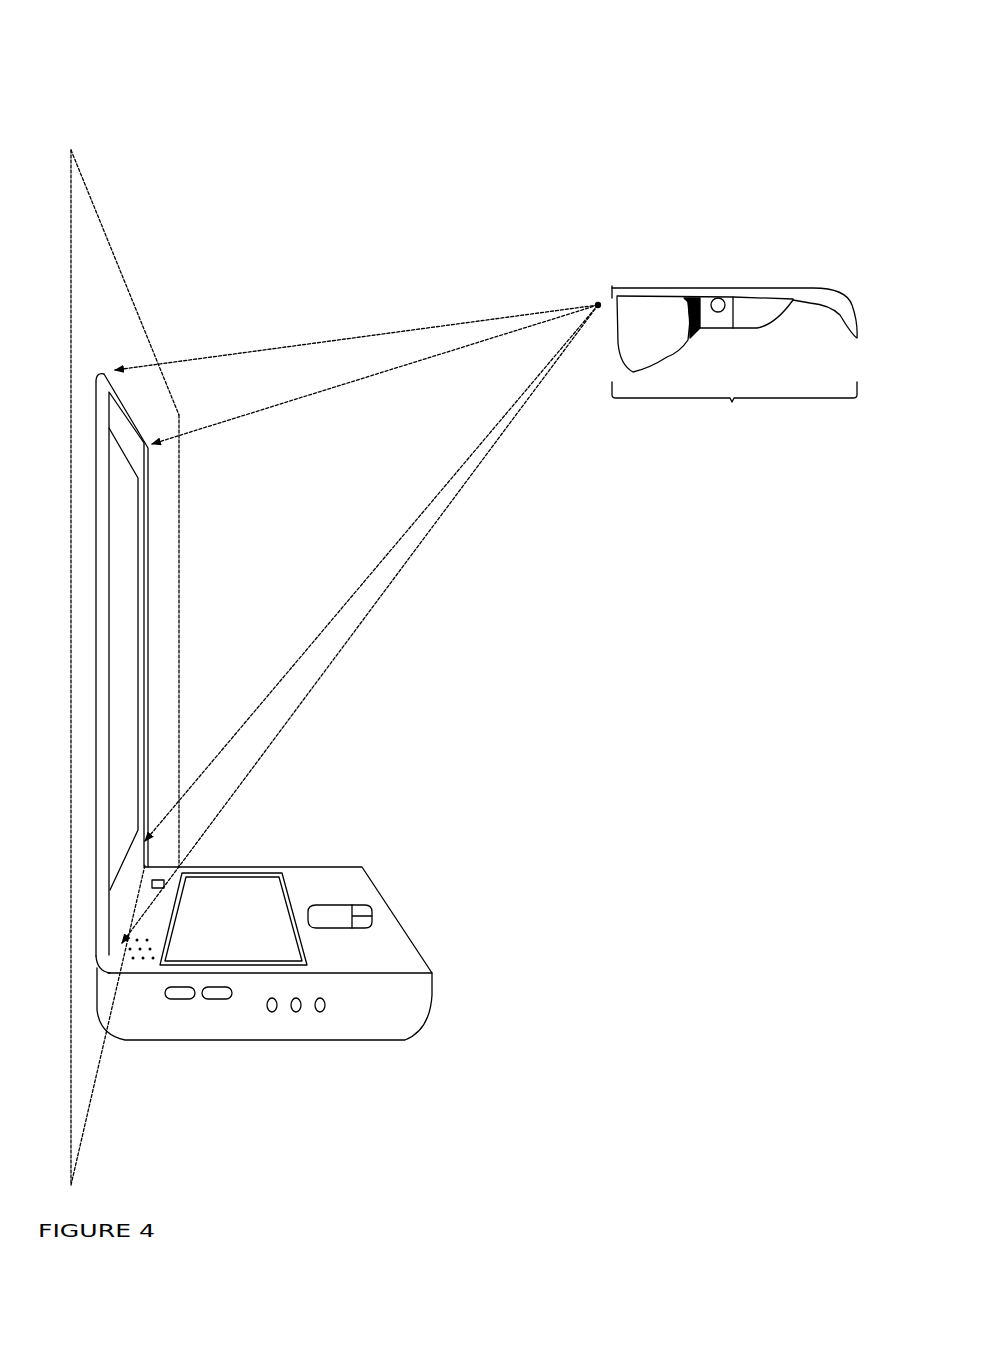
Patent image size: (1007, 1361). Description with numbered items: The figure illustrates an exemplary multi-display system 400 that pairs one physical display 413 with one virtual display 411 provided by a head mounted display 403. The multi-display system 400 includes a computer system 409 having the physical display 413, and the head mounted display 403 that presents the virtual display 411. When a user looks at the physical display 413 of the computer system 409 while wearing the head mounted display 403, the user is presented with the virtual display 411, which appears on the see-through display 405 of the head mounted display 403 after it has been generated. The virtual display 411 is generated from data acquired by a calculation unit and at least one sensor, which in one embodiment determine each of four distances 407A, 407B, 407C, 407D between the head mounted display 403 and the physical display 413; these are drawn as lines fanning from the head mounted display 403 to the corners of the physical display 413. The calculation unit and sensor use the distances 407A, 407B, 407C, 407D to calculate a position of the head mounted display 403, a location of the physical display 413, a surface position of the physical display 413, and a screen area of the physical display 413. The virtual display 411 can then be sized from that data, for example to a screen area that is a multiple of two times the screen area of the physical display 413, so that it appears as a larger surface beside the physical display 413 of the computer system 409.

The multi-display system 400 is at (650, 106).
The head mounted display 403 is at (734, 378).
The see-through display 405 is at (650, 312).
The distance 407A is at (305, 693).
The distance 407B is at (348, 607).
The distance 407C is at (443, 322).
The distance 407D is at (353, 380).
The computer system 409 is at (395, 930).
The virtual display 411 is at (180, 472).
The physical display 413 is at (738, 305).